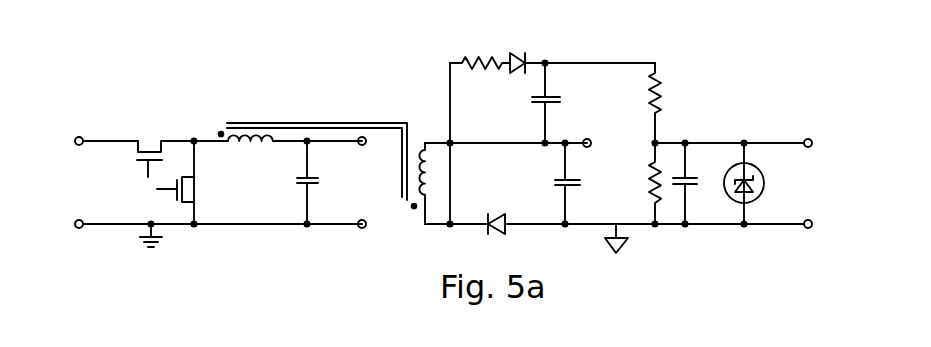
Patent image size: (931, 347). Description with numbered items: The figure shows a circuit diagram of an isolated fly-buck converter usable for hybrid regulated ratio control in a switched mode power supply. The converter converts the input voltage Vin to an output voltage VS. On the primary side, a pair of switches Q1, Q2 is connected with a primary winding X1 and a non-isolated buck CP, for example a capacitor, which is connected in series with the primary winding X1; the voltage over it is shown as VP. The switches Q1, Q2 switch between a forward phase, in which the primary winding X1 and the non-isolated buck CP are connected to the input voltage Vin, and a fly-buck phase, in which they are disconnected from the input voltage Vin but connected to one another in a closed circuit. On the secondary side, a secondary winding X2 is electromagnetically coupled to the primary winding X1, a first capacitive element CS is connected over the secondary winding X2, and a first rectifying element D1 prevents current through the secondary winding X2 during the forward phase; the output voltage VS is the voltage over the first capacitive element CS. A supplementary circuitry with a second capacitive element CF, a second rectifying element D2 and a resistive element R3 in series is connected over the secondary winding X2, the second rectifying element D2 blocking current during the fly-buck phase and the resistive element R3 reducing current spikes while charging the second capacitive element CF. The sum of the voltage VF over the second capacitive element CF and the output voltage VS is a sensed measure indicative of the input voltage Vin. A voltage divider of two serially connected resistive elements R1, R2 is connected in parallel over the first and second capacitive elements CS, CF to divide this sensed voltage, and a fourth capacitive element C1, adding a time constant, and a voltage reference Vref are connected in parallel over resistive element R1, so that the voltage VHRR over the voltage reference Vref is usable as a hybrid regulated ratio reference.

The input voltage Vin is at (203, 178).
The switch Q1 is at (165, 141).
The switch Q2 is at (190, 193).
The primary winding X1 is at (300, 161).
The non-isolated buck CP is at (293, 182).
The primary voltage VP is at (345, 182).
The secondary winding X2 is at (499, 183).
The first rectifying element D1 is at (638, 238).
The first capacitive element CS is at (554, 183).
The output voltage VS is at (592, 191).
The resistive element R3 is at (480, 43).
The second rectifying element D2 is at (582, 45).
The second capacitive element CF is at (532, 102).
The voltage over the second capacitive element VF is at (575, 103).
The resistive element R2 is at (635, 103).
The resistive element R1 is at (635, 183).
The fourth capacitive element C1 is at (699, 183).
The voltage over the voltage reference VHRR is at (763, 144).
The voltage reference Vref is at (832, 225).